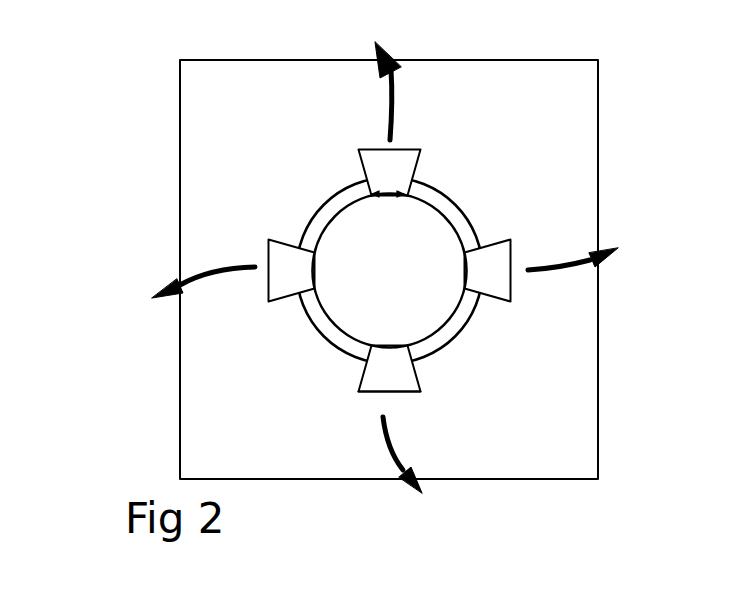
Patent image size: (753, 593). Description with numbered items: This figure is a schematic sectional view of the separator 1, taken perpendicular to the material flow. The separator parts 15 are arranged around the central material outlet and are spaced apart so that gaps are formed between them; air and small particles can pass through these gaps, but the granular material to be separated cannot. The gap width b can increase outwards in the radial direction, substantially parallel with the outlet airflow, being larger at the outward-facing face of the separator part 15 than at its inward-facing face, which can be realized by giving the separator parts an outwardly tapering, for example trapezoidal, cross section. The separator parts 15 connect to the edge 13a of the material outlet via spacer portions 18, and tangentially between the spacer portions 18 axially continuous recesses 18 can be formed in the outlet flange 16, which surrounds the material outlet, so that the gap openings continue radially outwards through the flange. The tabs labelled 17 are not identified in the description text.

The separator 1 is at (82, 226).
The edge 13a is at (370, 394).
The separator part 15 is at (313, 213).
The outlet flange 16 is at (552, 105).
The tab 17 is at (400, 163).
The spacer portion 18 is at (288, 232).
The gap width b is at (388, 208).